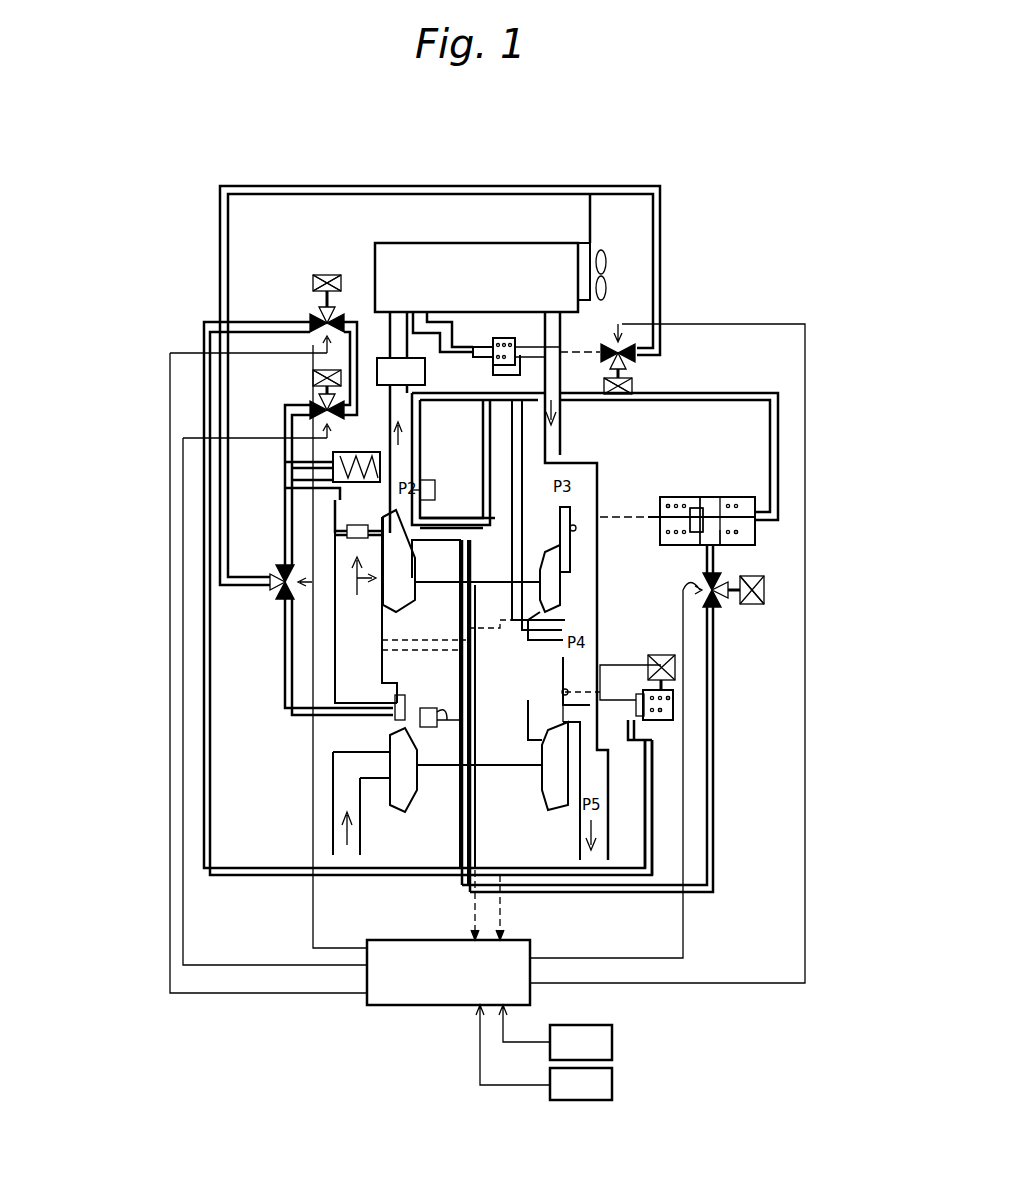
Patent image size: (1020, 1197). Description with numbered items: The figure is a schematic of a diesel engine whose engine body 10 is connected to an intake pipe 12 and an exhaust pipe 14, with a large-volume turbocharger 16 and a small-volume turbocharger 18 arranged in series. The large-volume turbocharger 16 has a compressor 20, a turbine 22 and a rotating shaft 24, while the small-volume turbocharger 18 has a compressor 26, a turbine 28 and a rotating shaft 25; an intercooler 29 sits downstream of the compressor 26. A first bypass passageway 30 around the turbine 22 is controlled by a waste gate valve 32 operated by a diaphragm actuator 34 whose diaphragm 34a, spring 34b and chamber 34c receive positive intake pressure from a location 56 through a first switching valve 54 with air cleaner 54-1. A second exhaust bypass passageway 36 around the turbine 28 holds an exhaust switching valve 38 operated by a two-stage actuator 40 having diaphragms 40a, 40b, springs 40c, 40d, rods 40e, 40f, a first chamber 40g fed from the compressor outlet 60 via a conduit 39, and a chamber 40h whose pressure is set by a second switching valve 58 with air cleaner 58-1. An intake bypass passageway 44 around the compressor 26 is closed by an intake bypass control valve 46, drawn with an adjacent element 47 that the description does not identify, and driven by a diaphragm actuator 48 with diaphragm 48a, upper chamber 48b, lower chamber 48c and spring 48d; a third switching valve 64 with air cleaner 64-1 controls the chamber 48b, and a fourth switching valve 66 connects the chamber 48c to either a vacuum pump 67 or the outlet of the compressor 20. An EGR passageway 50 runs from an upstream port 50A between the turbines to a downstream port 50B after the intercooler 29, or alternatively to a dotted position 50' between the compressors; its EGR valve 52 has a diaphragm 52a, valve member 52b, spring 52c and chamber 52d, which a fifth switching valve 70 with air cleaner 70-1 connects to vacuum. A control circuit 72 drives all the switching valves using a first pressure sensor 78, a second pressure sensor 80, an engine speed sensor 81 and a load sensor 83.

The engine body 10 is at (555, 243).
The intake pipe 12 is at (390, 358).
The exhaust pipe 14 is at (552, 440).
The large-volume turbocharger 16 is at (450, 772).
The small-volume turbocharger 18 is at (445, 585).
The compressor 20 is at (393, 805).
The turbine 22 is at (555, 805).
The rotating shaft 24 is at (508, 768).
The rotating shaft 25 is at (472, 580).
The compressor 26 is at (395, 607).
The turbine 28 is at (565, 600).
The intercooler 29 is at (412, 390).
The first bypass passageway 30 is at (552, 735).
The waste gate valve 32 is at (560, 692).
The diaphragm actuator 34 is at (686, 688).
The diaphragm 34a is at (660, 718).
The spring 34b is at (672, 700).
The chamber 34c is at (655, 760).
The second exhaust bypass passageway 36 is at (597, 490).
The exhaust switching butterfly valve 38 is at (576, 532).
The conduit 39 is at (740, 398).
The actuator 40 is at (775, 442).
The first diaphragm 40a is at (692, 500).
The second diaphragm 40b is at (760, 500).
The spring 40c is at (668, 500).
The spring 40d is at (735, 540).
The rod 40e is at (655, 522).
The second rod 40f is at (712, 497).
The first chamber 40g is at (758, 535).
The chamber 40h is at (725, 545).
The intake bypass passageway 44 is at (285, 565).
The intake bypass control valve 46 is at (347, 530).
The actuator 47 is at (330, 585).
The diaphragm actuator 48 is at (340, 452).
The diaphragm 48a is at (335, 472).
The chamber 48b is at (330, 450).
The chamber 48c is at (338, 484).
The spring 48d is at (340, 485).
The EGR passageway 50 is at (401, 317).
The upstream end 50A is at (580, 640).
The downstream end 50B is at (438, 325).
The modified EGR connection 50' is at (451, 647).
The EGR valve 52 is at (504, 328).
The diaphragm 52a is at (510, 340).
The valve member 52b is at (478, 357).
The spring 52c is at (520, 343).
The chamber 52d is at (550, 340).
The first three-port electromagnetic switching valve 54 is at (312, 318).
The air cleaner 54-1 is at (340, 275).
The location 56 is at (408, 428).
The second three-port electromagnetic switching valve 58 is at (718, 610).
The air cleaner 58-1 is at (765, 604).
The outlet position 60 is at (408, 545).
The third three-port electromagnetic switching valve 64 is at (312, 408).
The air cleaner 64-1 is at (318, 372).
The fourth three-port electromagnetic switching valve 66 is at (270, 595).
The vacuum pump 67 is at (590, 243).
The fifth three-port electromagnetic switching valve 70 is at (636, 362).
The air cleaner 70-1 is at (633, 386).
The control circuit 72 is at (427, 940).
The first pressure sensor 78 is at (437, 727).
The second pressure sensor 80 is at (428, 480).
The engine speed sensor 81 is at (612, 1038).
The engine load sensor 83 is at (612, 1082).